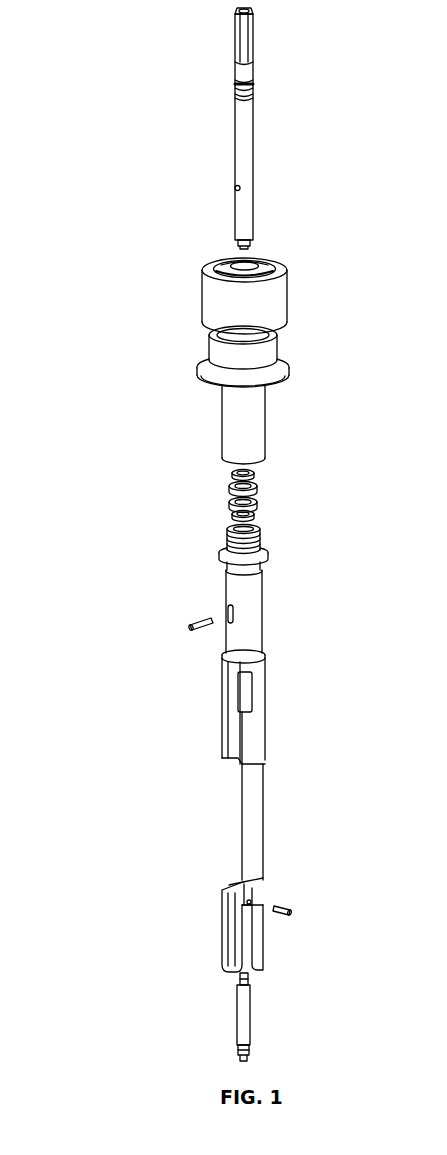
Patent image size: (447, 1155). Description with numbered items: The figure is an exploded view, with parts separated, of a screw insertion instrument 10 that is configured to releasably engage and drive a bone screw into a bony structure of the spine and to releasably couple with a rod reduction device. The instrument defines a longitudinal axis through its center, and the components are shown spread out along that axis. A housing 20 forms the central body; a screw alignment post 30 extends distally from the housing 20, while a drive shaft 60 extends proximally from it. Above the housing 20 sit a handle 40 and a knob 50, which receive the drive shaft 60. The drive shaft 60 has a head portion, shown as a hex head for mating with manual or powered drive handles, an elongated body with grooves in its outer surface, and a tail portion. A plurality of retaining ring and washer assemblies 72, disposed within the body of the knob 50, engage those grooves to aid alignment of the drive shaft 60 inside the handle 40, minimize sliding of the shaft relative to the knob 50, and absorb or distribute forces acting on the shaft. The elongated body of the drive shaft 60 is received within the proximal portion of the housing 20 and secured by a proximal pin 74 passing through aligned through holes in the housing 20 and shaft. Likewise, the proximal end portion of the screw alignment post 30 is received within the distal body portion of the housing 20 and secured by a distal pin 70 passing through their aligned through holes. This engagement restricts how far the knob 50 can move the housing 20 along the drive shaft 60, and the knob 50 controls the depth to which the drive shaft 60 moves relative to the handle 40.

The screw insertion instrument 10 is at (163, 235).
The housing 20 is at (297, 780).
The screw alignment post 30 is at (268, 1038).
The handle 40 is at (295, 392).
The knob 50 is at (310, 277).
The drive shaft 60 is at (268, 142).
The distal pin 70 is at (291, 909).
The retaining ring and washer assemblies 72 is at (265, 487).
The proximal pin 74 is at (191, 622).